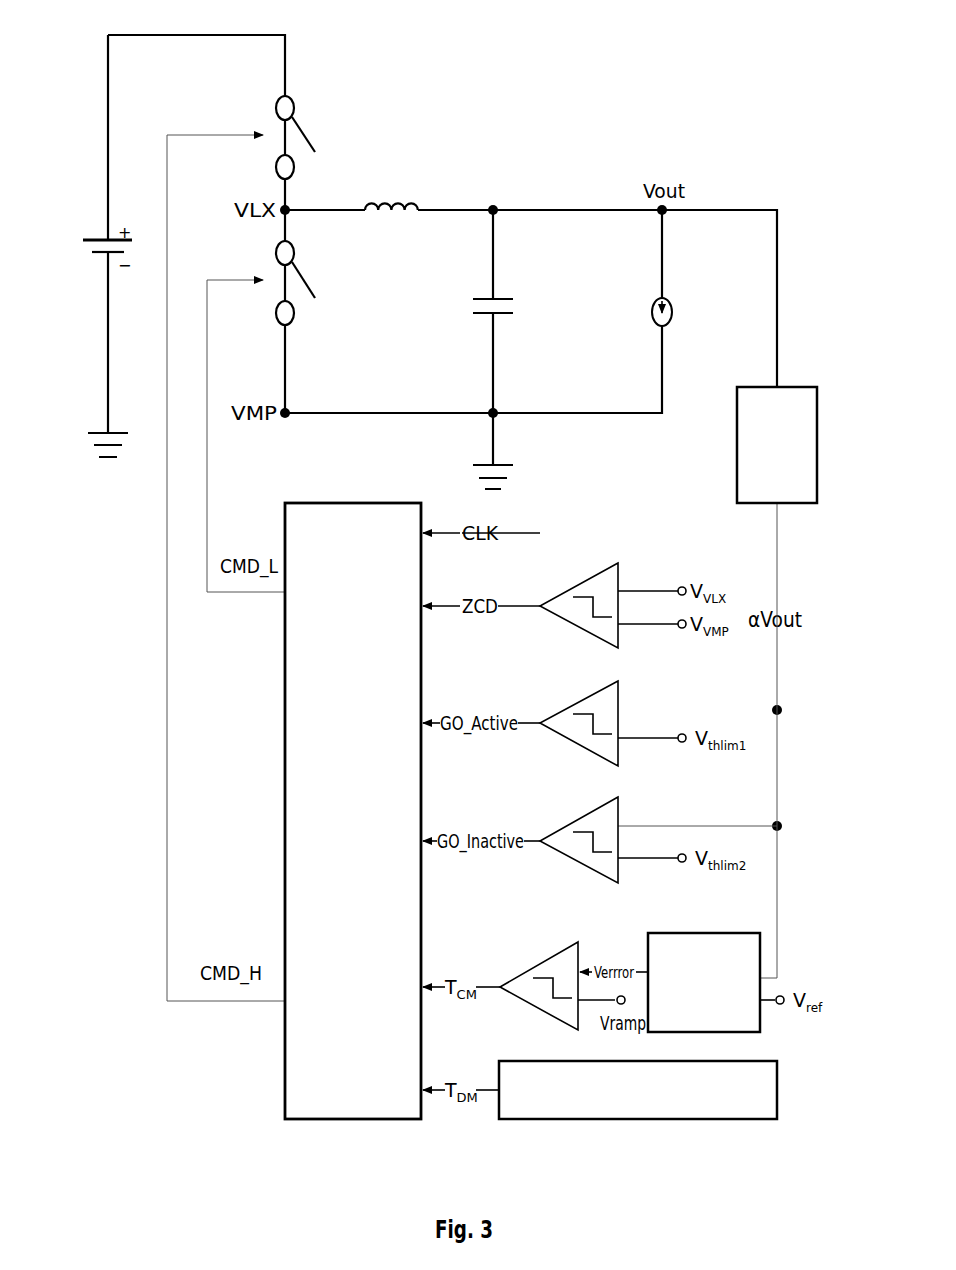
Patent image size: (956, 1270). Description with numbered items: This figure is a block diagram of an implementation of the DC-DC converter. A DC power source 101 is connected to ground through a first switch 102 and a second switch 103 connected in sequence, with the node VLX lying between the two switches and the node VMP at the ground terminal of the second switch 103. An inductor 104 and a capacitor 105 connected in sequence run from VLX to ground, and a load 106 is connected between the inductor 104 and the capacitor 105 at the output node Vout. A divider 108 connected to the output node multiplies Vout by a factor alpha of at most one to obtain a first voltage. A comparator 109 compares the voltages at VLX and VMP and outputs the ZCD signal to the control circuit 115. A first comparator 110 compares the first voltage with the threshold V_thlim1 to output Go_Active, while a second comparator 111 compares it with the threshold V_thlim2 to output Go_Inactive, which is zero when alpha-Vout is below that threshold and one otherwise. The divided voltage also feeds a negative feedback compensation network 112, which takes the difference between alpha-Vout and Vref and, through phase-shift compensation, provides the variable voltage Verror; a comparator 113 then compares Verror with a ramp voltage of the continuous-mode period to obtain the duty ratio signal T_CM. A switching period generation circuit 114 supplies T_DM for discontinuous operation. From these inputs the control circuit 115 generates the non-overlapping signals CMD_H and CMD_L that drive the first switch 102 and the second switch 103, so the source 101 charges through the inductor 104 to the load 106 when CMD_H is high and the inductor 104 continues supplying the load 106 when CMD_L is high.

The power source 101 is at (90, 237).
The first switch 102 is at (303, 130).
The second switch 103 is at (307, 277).
The inductor 104 is at (412, 195).
The capacitor 105 is at (505, 297).
The load 106 is at (670, 298).
The divider 108 is at (737, 452).
The comparator 109 is at (618, 563).
The first comparator 110 is at (620, 697).
The second comparator 111 is at (620, 817).
The negative feedback compensation network 112 is at (700, 938).
The comparator 113 is at (580, 960).
The switching period generation circuit 114 is at (777, 1100).
The control circuit 115 is at (342, 503).